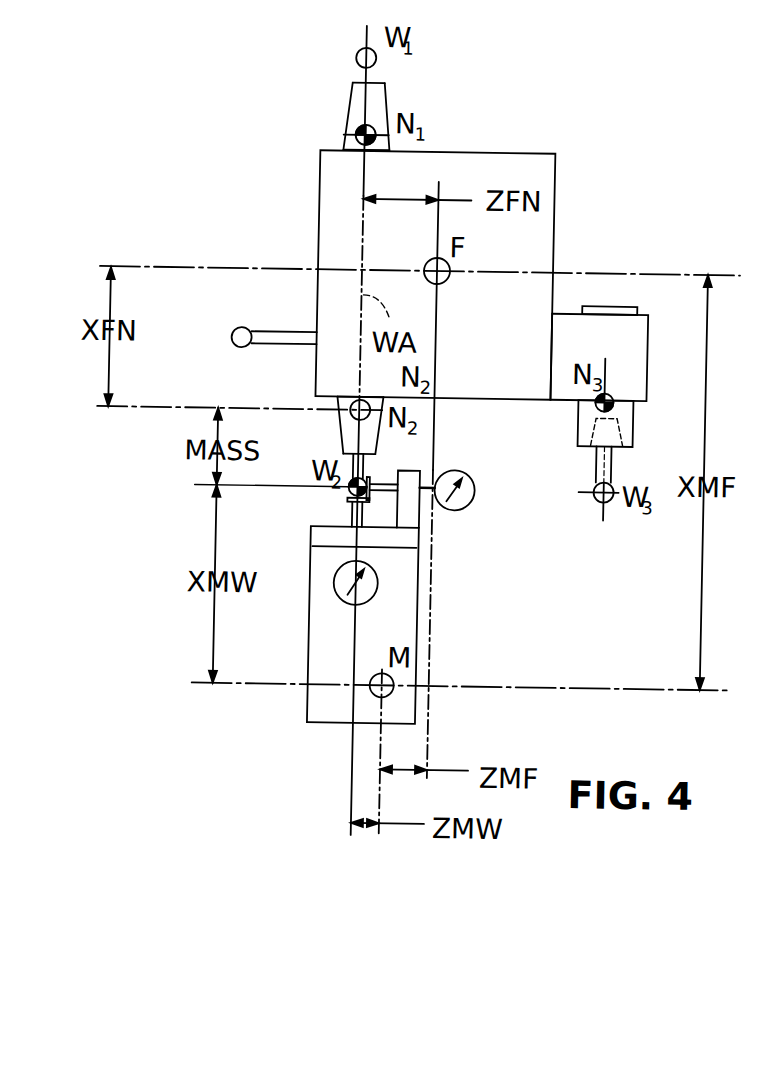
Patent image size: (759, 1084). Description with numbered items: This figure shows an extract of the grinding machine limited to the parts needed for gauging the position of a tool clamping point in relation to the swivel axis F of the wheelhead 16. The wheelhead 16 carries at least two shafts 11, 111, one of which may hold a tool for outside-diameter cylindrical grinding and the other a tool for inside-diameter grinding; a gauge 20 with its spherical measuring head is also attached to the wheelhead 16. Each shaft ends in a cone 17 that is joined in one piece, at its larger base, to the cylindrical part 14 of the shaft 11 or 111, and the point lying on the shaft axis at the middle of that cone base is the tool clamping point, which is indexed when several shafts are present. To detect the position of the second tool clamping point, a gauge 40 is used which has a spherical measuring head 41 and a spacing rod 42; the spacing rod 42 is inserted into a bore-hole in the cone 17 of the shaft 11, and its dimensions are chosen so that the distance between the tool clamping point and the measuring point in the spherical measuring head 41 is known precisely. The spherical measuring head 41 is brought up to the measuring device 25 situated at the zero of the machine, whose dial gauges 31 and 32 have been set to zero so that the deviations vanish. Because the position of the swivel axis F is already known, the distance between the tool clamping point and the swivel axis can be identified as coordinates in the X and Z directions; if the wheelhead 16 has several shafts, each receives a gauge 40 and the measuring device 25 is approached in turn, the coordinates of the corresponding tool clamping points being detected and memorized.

The shaft 11 is at (329, 425).
The cylindrical part 14 is at (343, 150).
The wheelhead 16 is at (308, 192).
The cone 17 is at (353, 116).
The gauge 20 is at (269, 323).
The measuring device 25 is at (306, 712).
The dial gauge 31 is at (340, 590).
The dial gauge 32 is at (462, 520).
The gauge 40 is at (344, 456).
The spherical measuring head 41 is at (352, 488).
The spacing rod 42 is at (375, 477).
The shaft 111 is at (396, 90).